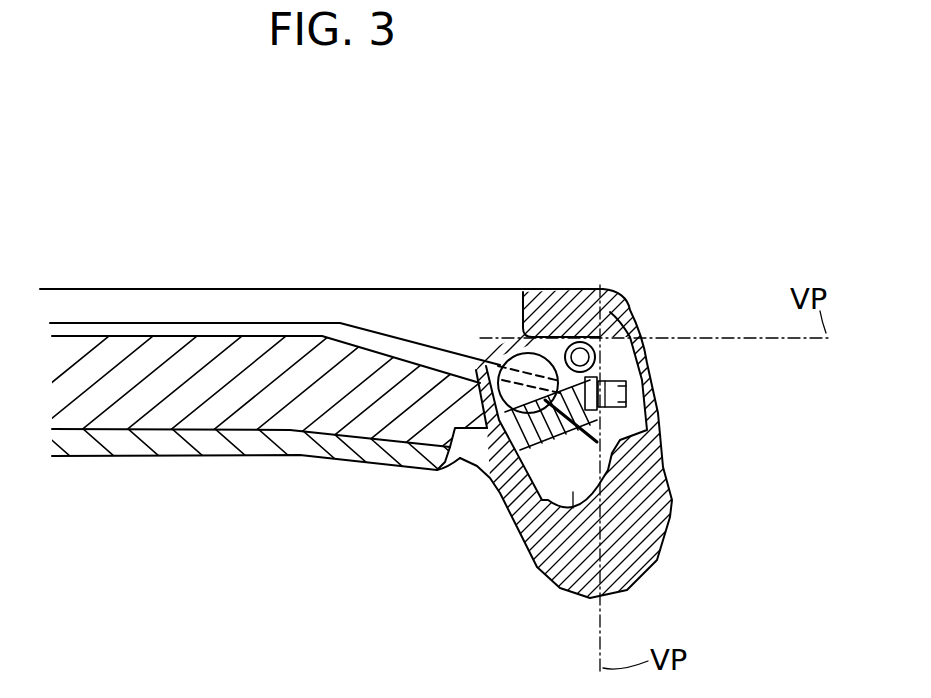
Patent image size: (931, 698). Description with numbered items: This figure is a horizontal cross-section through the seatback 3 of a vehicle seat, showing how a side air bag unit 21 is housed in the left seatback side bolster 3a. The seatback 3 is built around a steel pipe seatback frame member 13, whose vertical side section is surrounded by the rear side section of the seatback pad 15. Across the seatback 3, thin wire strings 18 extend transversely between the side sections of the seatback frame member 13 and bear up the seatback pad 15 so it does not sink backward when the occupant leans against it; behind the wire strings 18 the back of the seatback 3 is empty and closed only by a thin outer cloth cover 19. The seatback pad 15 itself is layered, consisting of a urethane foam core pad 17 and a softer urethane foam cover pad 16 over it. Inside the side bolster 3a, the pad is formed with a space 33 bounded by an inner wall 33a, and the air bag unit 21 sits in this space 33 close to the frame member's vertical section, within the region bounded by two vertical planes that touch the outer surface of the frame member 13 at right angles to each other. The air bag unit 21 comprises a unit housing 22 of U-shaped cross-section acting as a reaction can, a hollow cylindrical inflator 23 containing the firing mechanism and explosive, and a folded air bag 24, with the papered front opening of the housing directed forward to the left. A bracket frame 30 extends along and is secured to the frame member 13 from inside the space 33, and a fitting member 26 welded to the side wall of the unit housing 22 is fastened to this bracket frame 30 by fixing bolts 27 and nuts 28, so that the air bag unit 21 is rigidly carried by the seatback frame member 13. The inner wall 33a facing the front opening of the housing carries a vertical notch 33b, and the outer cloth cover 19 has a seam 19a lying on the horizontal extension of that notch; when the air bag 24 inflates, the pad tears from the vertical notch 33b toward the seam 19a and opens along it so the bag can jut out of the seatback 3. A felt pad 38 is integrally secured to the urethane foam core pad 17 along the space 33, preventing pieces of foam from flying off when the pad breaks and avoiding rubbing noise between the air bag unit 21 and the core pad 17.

The seatback 3 is at (352, 256).
The seatback side bolster 3a is at (562, 543).
The seatback frame member 13 is at (607, 337).
The seatback pad 15 is at (265, 522).
The urethane foam cover pad 16 is at (278, 457).
The urethane foam core pad 17 is at (197, 417).
The wire string 18 is at (127, 323).
The outer cloth cover 19 is at (278, 288).
The seam 19a is at (672, 512).
The air bag unit 21 is at (490, 320).
The unit housing 22 is at (503, 367).
The inflator 23 is at (537, 362).
The air bag 24 is at (513, 530).
The fitting member 26 is at (643, 458).
The fixing bolt 27 is at (627, 404).
The nut 28 is at (645, 422).
The bracket frame 30 is at (706, 362).
The space 33 is at (576, 598).
The inner wall 33a is at (607, 530).
The vertical notch 33b is at (637, 550).
The felt pad 38 is at (493, 493).